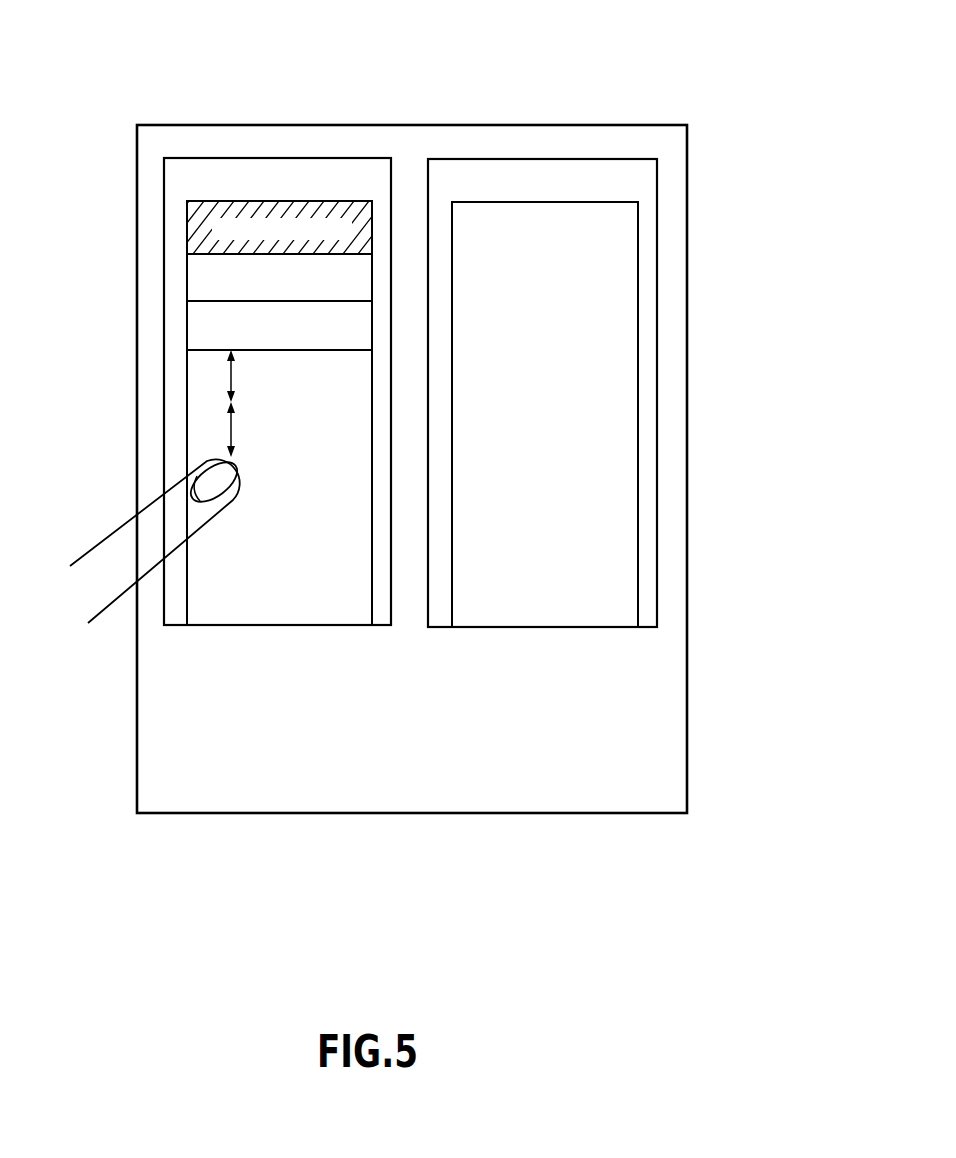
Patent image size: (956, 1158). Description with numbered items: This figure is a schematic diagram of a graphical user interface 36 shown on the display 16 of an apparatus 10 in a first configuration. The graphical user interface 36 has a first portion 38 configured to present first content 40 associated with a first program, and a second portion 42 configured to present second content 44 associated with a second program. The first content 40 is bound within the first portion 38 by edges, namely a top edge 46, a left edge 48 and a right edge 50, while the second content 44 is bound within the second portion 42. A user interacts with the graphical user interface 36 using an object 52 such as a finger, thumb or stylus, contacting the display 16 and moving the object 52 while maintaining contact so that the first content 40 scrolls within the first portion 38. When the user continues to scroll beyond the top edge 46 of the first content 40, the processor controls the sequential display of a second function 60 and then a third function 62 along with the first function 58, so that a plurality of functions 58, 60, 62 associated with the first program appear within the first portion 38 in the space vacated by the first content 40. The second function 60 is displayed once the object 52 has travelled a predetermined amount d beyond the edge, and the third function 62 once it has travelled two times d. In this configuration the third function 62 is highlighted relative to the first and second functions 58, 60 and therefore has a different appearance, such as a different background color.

The apparatus 10 is at (727, 118).
The display 16 is at (658, 673).
The graphical user interface 36 is at (490, 763).
The first portion 38 is at (278, 158).
The first content 40 is at (292, 531).
The second portion 42 is at (543, 159).
The second content 44 is at (557, 397).
The top edge 46 is at (288, 352).
The left edge 48 is at (189, 553).
The right edge 50 is at (372, 557).
The object 52 is at (103, 595).
The first function 58 is at (187, 327).
The second function 60 is at (187, 278).
The third function 62 is at (187, 227).